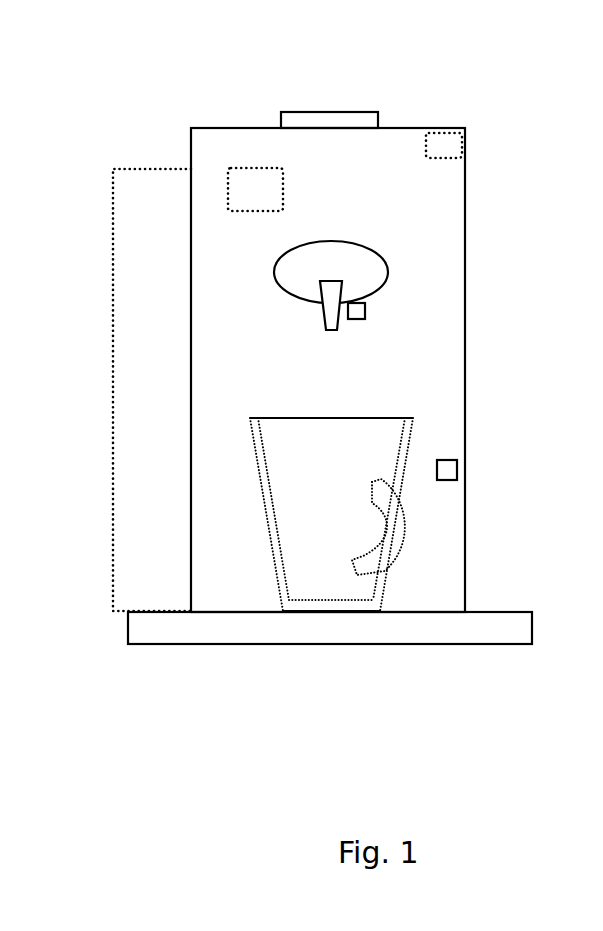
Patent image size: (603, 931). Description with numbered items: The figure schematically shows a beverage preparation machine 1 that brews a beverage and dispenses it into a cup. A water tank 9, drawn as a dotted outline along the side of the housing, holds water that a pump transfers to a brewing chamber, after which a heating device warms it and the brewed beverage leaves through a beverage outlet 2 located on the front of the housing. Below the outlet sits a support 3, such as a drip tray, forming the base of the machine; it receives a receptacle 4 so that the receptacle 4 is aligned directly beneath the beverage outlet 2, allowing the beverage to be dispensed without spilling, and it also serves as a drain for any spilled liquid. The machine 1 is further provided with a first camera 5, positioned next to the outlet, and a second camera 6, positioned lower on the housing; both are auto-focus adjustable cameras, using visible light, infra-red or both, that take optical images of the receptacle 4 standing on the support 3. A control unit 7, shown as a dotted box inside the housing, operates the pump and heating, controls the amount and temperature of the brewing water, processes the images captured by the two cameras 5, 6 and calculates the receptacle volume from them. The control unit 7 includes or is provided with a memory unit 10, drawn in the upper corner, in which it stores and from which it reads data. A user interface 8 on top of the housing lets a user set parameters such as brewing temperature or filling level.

The beverage preparation machine 1 is at (518, 72).
The beverage outlet 2 is at (378, 241).
The support 3 is at (514, 614).
The receptacle 4 is at (356, 420).
The first camera 5 is at (371, 312).
The second camera 6 is at (465, 470).
The control unit 7 is at (283, 178).
The user interface 8 is at (305, 122).
The water tank 9 is at (128, 244).
The memory unit 10 is at (448, 144).